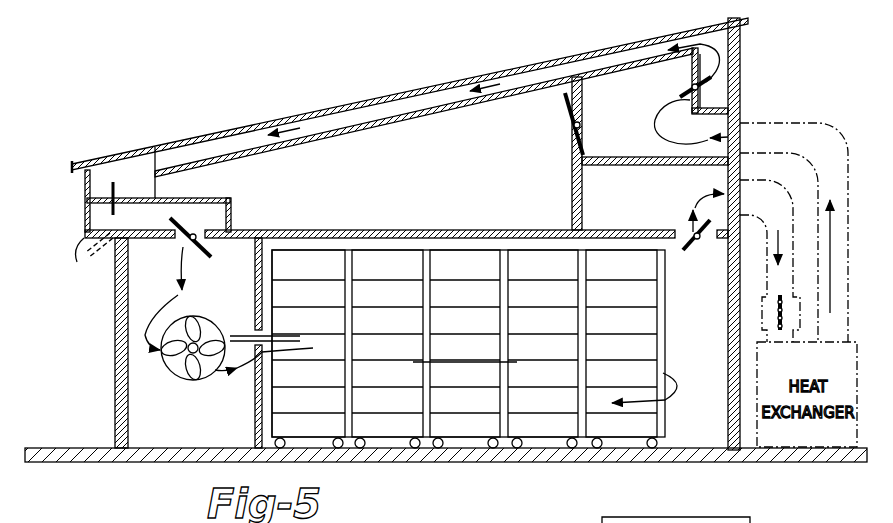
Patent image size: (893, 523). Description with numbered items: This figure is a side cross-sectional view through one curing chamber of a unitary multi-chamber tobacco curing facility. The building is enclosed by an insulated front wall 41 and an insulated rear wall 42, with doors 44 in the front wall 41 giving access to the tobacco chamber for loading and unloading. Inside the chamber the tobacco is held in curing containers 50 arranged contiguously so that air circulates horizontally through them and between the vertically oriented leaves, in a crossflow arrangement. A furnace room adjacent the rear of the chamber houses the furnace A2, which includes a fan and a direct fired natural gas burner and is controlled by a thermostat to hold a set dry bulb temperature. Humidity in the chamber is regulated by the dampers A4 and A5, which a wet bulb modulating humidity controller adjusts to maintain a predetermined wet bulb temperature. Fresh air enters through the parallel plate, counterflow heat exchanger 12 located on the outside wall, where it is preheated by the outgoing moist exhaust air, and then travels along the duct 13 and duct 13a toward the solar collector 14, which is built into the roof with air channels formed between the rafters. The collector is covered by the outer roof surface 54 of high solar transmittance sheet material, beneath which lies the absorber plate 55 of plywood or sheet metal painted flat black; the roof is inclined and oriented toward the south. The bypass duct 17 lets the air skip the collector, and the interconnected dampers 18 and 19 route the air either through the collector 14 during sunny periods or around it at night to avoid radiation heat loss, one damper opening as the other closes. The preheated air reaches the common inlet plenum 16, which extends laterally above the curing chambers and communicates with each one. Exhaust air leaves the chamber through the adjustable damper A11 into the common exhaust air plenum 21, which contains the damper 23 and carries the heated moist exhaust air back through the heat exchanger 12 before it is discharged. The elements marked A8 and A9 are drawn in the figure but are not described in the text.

The heat exchanger 12 is at (835, 435).
The solar collector 14 is at (438, 82).
The absorber plate 55 is at (378, 118).
The outer roof surface 54 is at (297, 118).
The common inlet plenum 16 is at (127, 172).
The air inlet plenum A8 is at (110, 190).
The damper A5 is at (193, 232).
The outside air inlet damper A9 is at (83, 240).
The rear wall 42 is at (115, 357).
The furnace A2 is at (197, 372).
The damper A4 is at (248, 336).
The curing containers 50 is at (407, 307).
The bypass duct 17 is at (442, 191).
The damper 19 is at (570, 140).
The duct 13a is at (735, 53).
The damper 18 is at (678, 97).
The front wall 41 is at (740, 80).
The duct 13 is at (803, 137).
The common exhaust air plenum 21 is at (790, 208).
The adjustable damper A11 is at (690, 248).
The damper 23 is at (777, 300).
The doors 44 is at (730, 400).